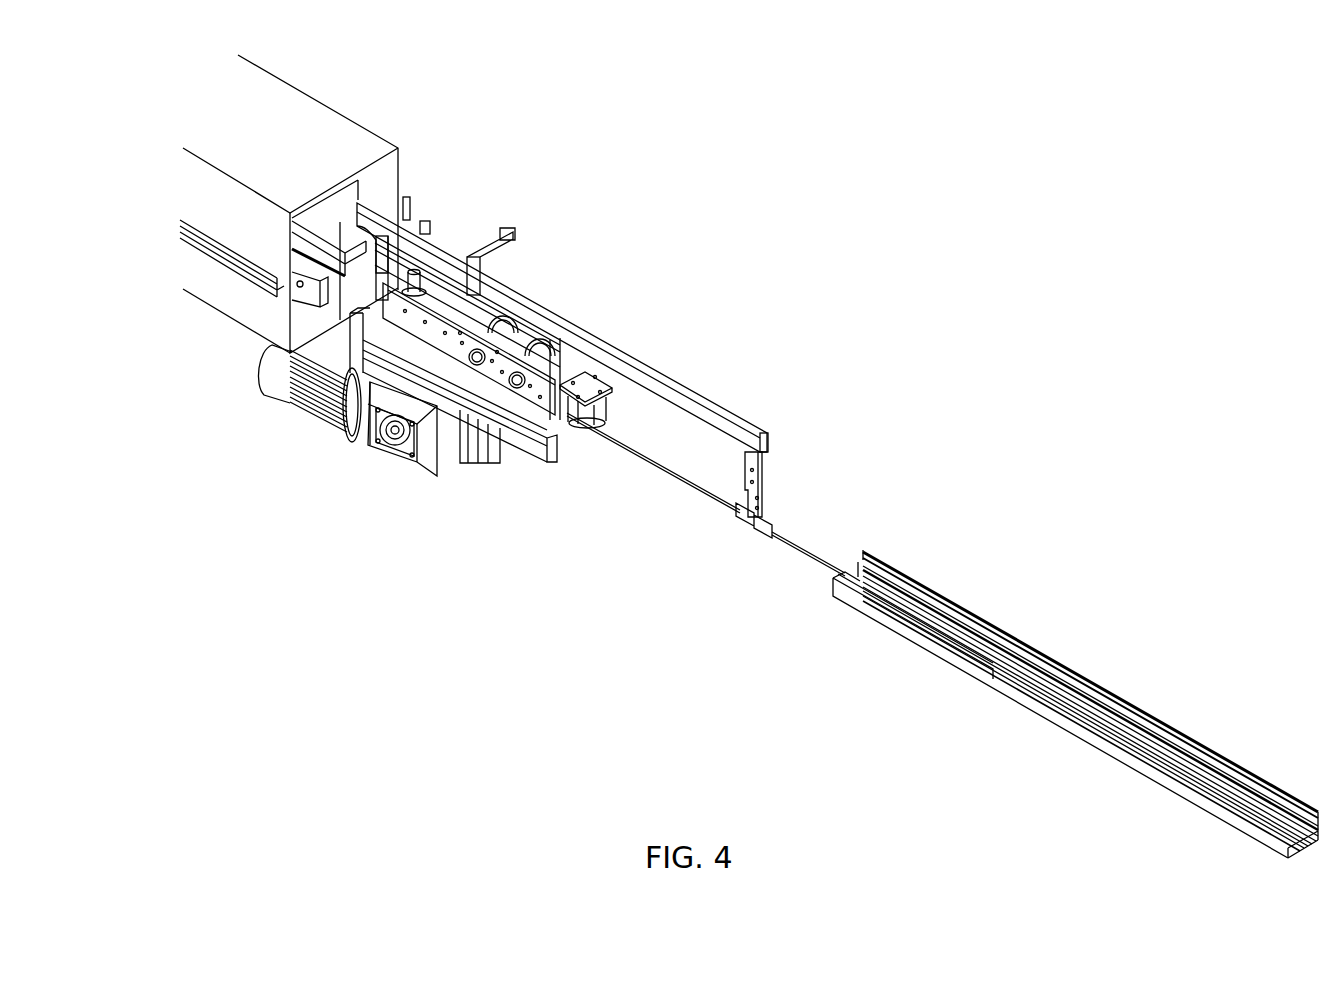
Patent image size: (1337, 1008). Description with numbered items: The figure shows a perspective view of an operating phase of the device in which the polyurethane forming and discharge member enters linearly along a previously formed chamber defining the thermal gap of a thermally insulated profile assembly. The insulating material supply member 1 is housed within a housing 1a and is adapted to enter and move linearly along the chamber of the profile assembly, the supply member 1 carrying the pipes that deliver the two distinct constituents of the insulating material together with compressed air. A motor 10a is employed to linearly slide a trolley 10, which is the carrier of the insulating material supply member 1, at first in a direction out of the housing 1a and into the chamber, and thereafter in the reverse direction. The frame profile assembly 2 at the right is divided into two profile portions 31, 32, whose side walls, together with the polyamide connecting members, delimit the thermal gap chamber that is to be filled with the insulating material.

The housing 1a is at (333, 153).
The insulating material supply member 1 is at (807, 543).
The guide rail 2 is at (1253, 812).
The trolley 10 is at (503, 373).
The motor 10a is at (362, 420).
The profile portion 31 is at (928, 638).
The profile portion 32 is at (973, 613).